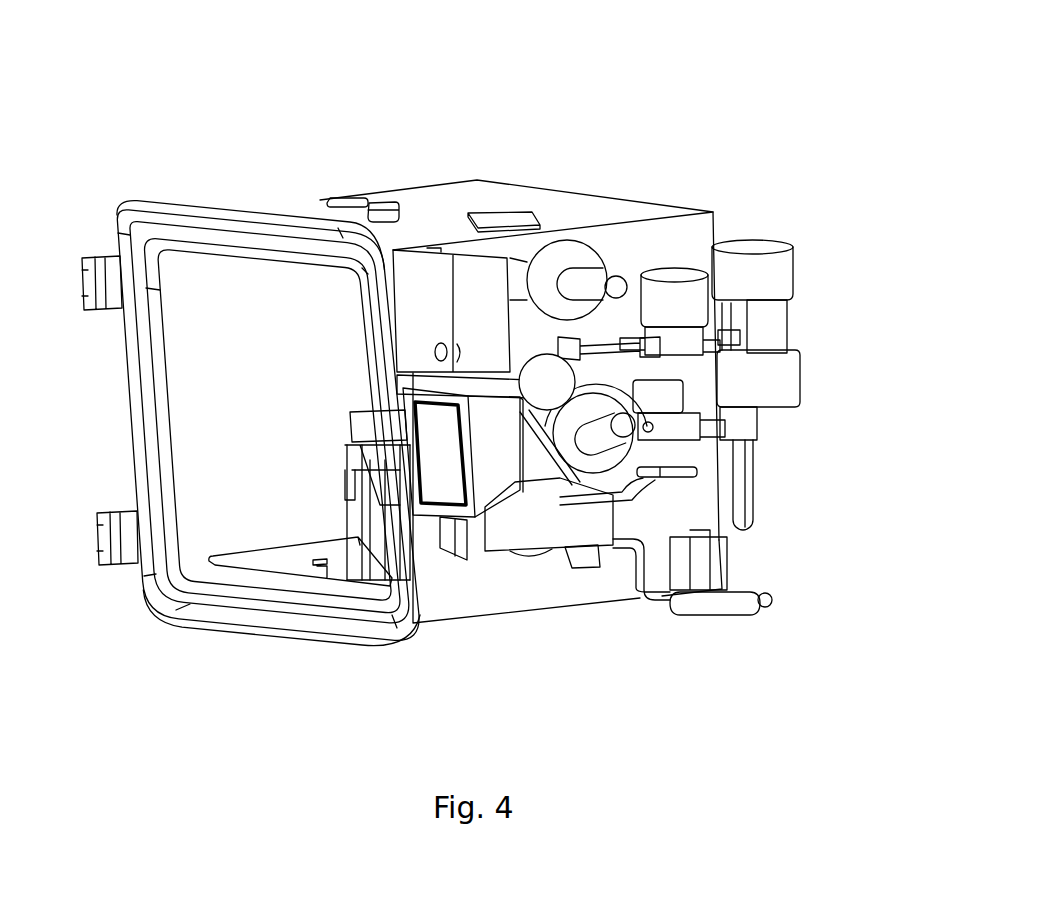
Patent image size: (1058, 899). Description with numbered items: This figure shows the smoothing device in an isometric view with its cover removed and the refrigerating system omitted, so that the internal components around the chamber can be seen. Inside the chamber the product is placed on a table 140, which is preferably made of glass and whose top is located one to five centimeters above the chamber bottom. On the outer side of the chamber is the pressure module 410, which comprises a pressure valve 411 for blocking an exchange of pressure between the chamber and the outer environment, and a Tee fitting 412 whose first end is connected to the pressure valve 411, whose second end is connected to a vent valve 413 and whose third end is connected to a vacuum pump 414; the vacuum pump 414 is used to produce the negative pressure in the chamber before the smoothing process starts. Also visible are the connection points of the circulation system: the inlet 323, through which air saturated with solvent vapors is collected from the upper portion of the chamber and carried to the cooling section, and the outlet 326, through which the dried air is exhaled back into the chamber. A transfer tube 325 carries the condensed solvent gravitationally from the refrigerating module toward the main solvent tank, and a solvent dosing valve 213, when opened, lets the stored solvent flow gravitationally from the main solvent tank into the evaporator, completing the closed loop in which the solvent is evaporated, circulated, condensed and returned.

The pressure module 410 is at (685, 218).
The table 140 is at (283, 551).
The inlet 323 is at (598, 280).
The outlet 326 is at (600, 437).
The pressure valve 411 is at (675, 303).
The vacuum pump 414 is at (763, 258).
The vent valve 413 is at (670, 395).
The Tee fitting 412 is at (735, 421).
The transfer tube 325 is at (683, 473).
The solvent dosing valve 213 is at (706, 553).